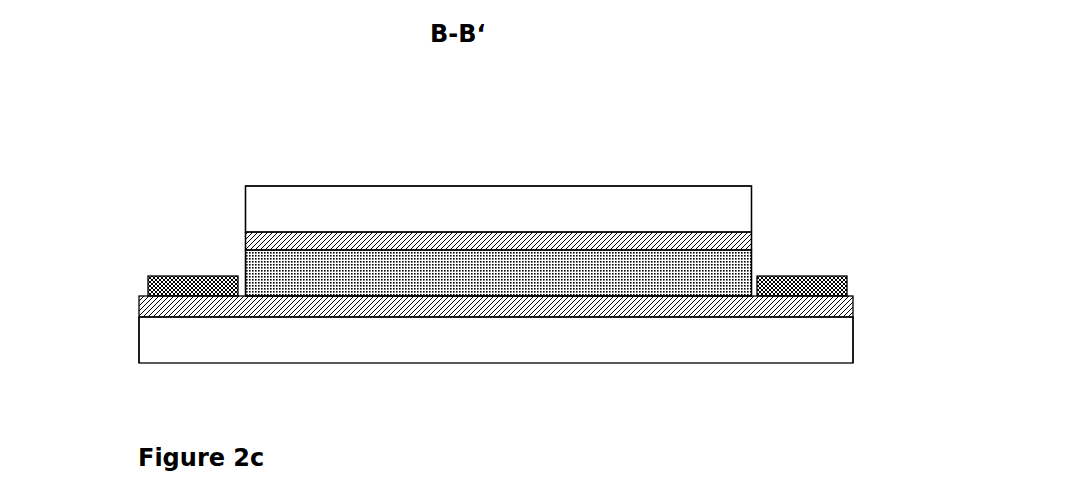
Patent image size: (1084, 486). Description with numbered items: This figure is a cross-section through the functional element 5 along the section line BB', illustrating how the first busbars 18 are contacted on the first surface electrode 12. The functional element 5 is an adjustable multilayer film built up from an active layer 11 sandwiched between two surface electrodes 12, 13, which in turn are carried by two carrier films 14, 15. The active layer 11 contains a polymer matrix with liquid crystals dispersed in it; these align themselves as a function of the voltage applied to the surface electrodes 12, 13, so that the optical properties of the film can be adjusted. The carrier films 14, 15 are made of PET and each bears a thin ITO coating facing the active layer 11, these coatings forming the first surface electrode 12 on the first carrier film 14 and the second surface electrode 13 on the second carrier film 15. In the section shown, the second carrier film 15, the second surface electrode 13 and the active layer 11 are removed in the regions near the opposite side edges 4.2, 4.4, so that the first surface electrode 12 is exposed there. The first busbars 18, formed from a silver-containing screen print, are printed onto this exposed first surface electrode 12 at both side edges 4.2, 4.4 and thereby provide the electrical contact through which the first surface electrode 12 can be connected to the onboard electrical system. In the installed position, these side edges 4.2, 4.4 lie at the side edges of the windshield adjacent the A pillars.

The functional element 5 is at (634, 153).
The active layer 11 is at (467, 270).
The first surface electrode 12 is at (533, 303).
The second surface electrode 13 is at (503, 237).
The first carrier film 14 is at (635, 332).
The second carrier film 15 is at (550, 205).
The first busbar 18 is at (193, 288).
The side edge 4.2 is at (863, 336).
The side edge 4.4 is at (130, 336).